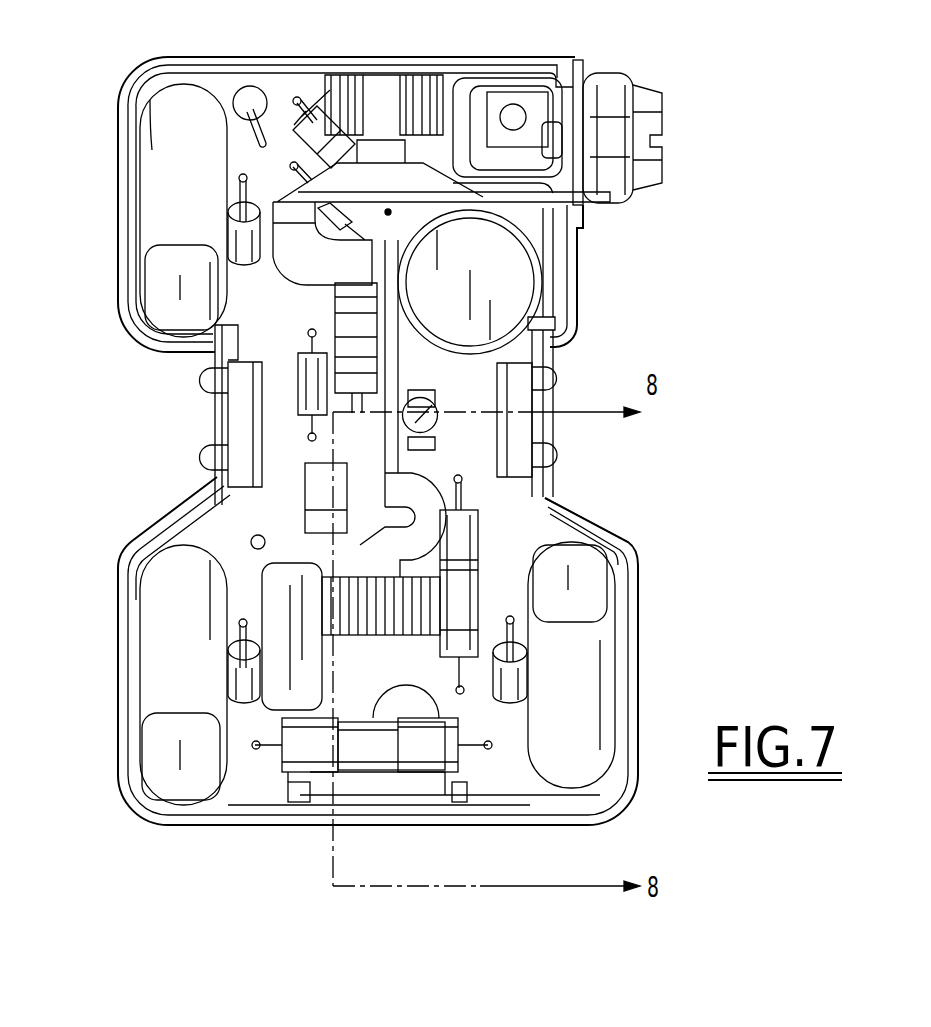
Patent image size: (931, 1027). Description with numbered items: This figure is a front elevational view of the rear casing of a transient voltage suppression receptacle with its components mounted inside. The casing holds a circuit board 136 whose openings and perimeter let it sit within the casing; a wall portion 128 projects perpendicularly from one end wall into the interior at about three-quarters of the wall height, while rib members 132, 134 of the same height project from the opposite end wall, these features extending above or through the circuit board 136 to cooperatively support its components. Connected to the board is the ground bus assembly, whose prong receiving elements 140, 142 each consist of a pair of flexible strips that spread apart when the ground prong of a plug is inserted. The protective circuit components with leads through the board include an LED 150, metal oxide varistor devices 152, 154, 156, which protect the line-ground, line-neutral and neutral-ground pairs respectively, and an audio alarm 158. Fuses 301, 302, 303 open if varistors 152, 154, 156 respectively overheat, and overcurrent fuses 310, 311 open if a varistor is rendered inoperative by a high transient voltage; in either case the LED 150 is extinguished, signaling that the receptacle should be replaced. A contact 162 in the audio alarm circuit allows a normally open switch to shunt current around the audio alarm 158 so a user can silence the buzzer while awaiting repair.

The wall portion 128 is at (445, 97).
The rib member 132 is at (293, 802).
The rib member 134 is at (458, 802).
The circuit board 136 is at (508, 512).
The prong receiving element 140 is at (430, 93).
The prong receiving element 142 is at (420, 632).
The LED 150 is at (430, 427).
The metal oxide varistor device 152 is at (163, 140).
The metal oxide varistor device 154 is at (148, 622).
The metal oxide varistor device 156 is at (588, 708).
The audio alarm 158 is at (505, 290).
The contact 162 is at (303, 483).
The fuse 301 is at (230, 215).
The fuse 302 is at (230, 652).
The fuse 303 is at (510, 663).
The overcurrent fuse 310 is at (372, 750).
The overcurrent fuse 311 is at (468, 567).